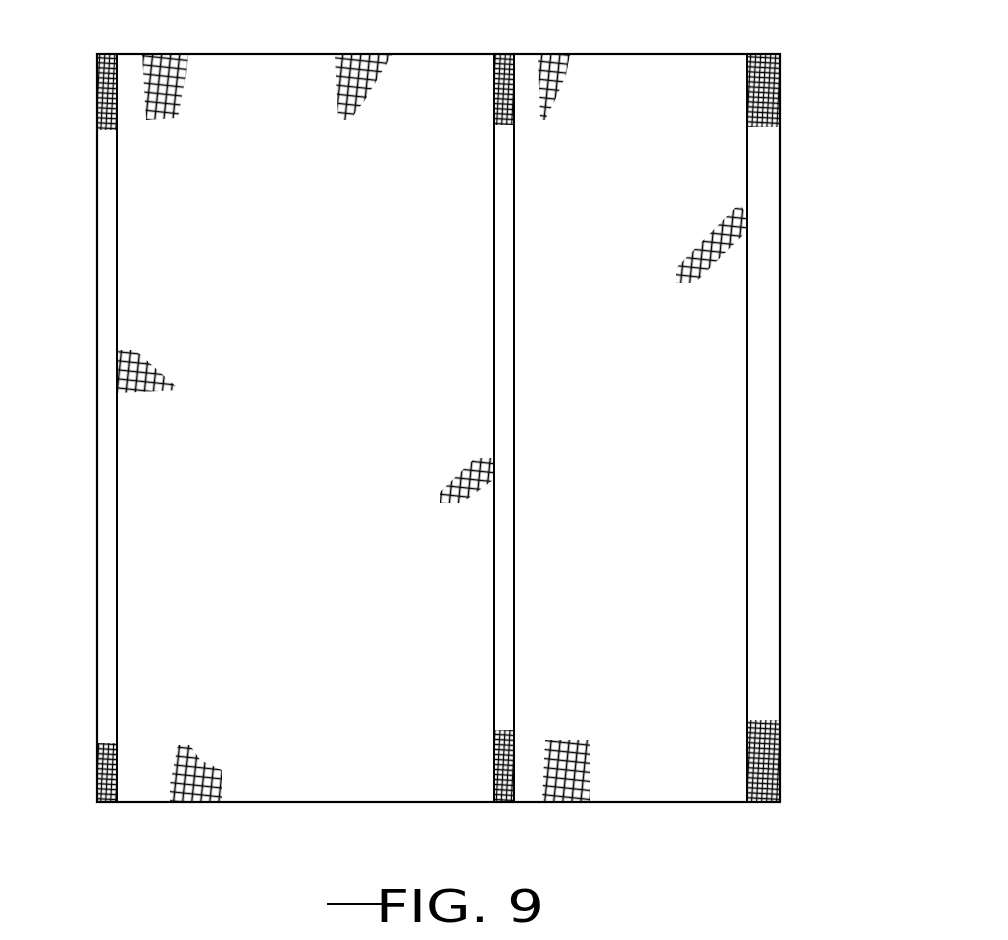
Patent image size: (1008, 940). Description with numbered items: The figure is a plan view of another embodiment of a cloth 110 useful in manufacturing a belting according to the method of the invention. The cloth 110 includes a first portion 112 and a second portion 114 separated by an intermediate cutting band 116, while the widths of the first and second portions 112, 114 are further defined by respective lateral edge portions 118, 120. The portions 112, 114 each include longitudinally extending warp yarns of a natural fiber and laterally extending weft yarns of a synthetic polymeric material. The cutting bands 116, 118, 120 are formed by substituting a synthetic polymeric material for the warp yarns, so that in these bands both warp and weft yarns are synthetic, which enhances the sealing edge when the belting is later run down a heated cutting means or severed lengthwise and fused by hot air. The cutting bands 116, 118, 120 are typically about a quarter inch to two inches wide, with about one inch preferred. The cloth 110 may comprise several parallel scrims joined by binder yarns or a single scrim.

The cloth 110 is at (812, 383).
The first portion 112 is at (291, 764).
The second portion 114 is at (655, 790).
The intermediate cutting band 116 is at (505, 803).
The lateral edge portion 118 is at (104, 659).
The lateral edge portion 120 is at (767, 598).